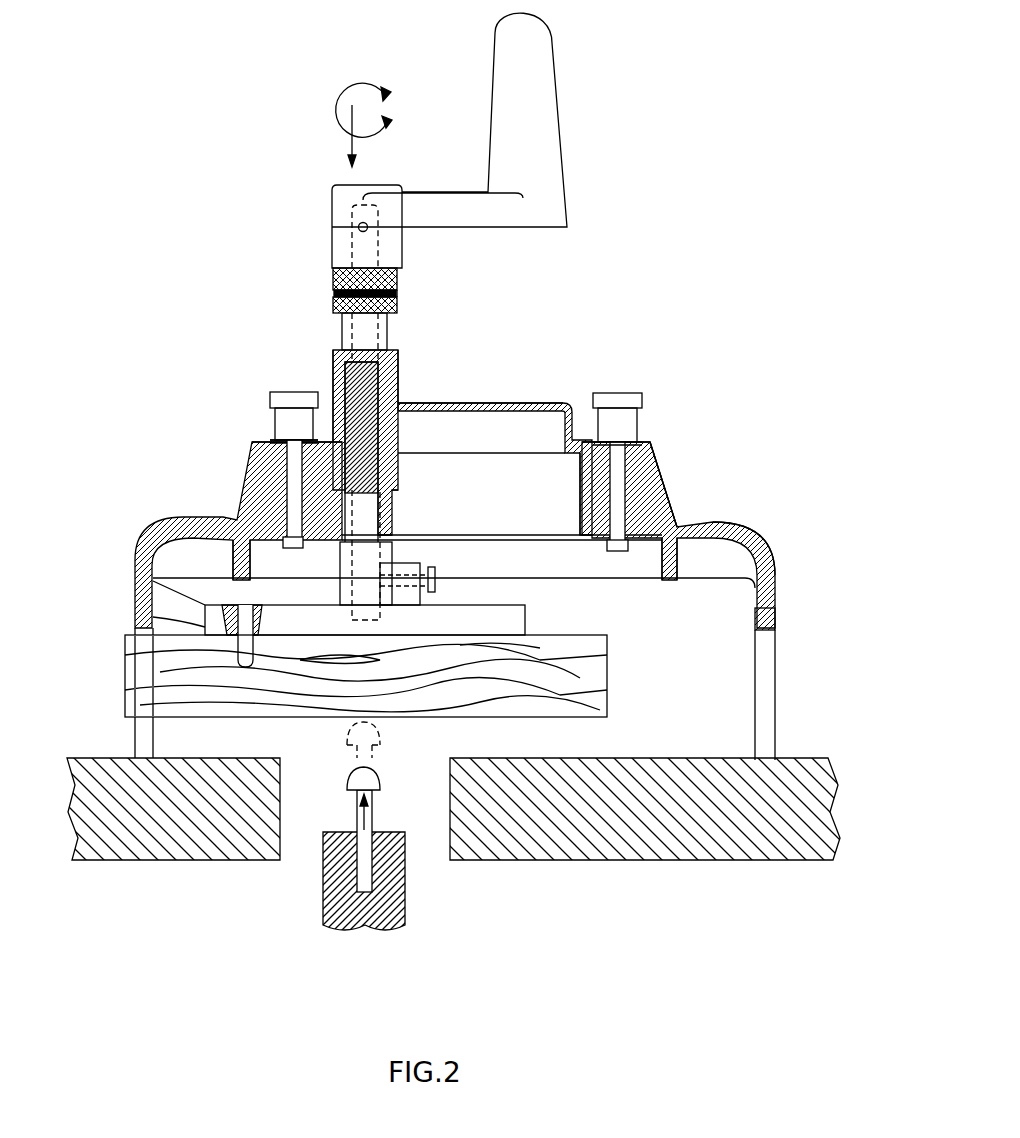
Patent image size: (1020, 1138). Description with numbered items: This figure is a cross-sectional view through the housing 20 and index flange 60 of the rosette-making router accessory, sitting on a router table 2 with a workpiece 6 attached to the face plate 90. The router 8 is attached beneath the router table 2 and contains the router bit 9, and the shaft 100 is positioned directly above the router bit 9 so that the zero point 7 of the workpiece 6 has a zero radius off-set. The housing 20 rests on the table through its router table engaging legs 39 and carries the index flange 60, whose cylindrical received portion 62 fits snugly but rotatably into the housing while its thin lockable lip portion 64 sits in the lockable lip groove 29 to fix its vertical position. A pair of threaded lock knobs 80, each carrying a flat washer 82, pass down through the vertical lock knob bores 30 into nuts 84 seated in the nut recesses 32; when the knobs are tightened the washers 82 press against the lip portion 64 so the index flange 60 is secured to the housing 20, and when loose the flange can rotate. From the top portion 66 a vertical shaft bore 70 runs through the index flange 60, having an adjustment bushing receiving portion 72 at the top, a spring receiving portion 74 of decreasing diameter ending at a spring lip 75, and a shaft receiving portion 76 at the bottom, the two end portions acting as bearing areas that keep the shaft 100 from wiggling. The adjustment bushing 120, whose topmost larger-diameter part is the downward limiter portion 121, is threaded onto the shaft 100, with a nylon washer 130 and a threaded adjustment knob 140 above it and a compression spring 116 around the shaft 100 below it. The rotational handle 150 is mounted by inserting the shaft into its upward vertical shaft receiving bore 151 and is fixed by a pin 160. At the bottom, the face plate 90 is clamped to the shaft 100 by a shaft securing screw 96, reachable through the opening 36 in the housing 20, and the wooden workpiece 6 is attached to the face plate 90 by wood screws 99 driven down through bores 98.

The router table 2 is at (150, 845).
The workpiece 6 is at (608, 681).
The zero point 7 is at (360, 716).
The router 8 is at (405, 900).
The router bit 9 is at (380, 777).
The housing 20 is at (176, 525).
The lockable lip groove 29 is at (290, 440).
The vertical lock knob bore 30 is at (640, 485).
The nut recess 32 is at (232, 526).
The opening 36 is at (766, 571).
The router table engaging legs 39 is at (135, 725).
The index flange 60 is at (476, 398).
The received portion 62 is at (596, 466).
The lockable lip portion 64 is at (333, 430).
The top portion 66 is at (522, 402).
The vertical shaft bore 70 is at (397, 356).
The adjustment bushing receiving portion 72 is at (398, 388).
The spring receiving portion 74 is at (398, 432).
The spring lip 75 is at (400, 485).
The shaft receiving portion 76 is at (386, 521).
The threaded lock knob 80 is at (271, 395).
The flat washer 82 is at (280, 441).
The nut 84 is at (262, 502).
The face plate 90 is at (533, 618).
The shaft securing screw 96 is at (437, 585).
The bores 98 is at (222, 621).
The wood screws 99 is at (140, 581).
The shaft 100 is at (383, 538).
The compression spring 116 is at (348, 368).
The adjustment bushing 120 is at (390, 326).
The downward limiter portion 121 is at (395, 297).
The washer 130 is at (334, 296).
The threaded adjustment knob 140 is at (336, 283).
The rotational handle 150 is at (540, 71).
The upward vertical shaft receiving bore 151 is at (351, 244).
The pin 160 is at (358, 222).